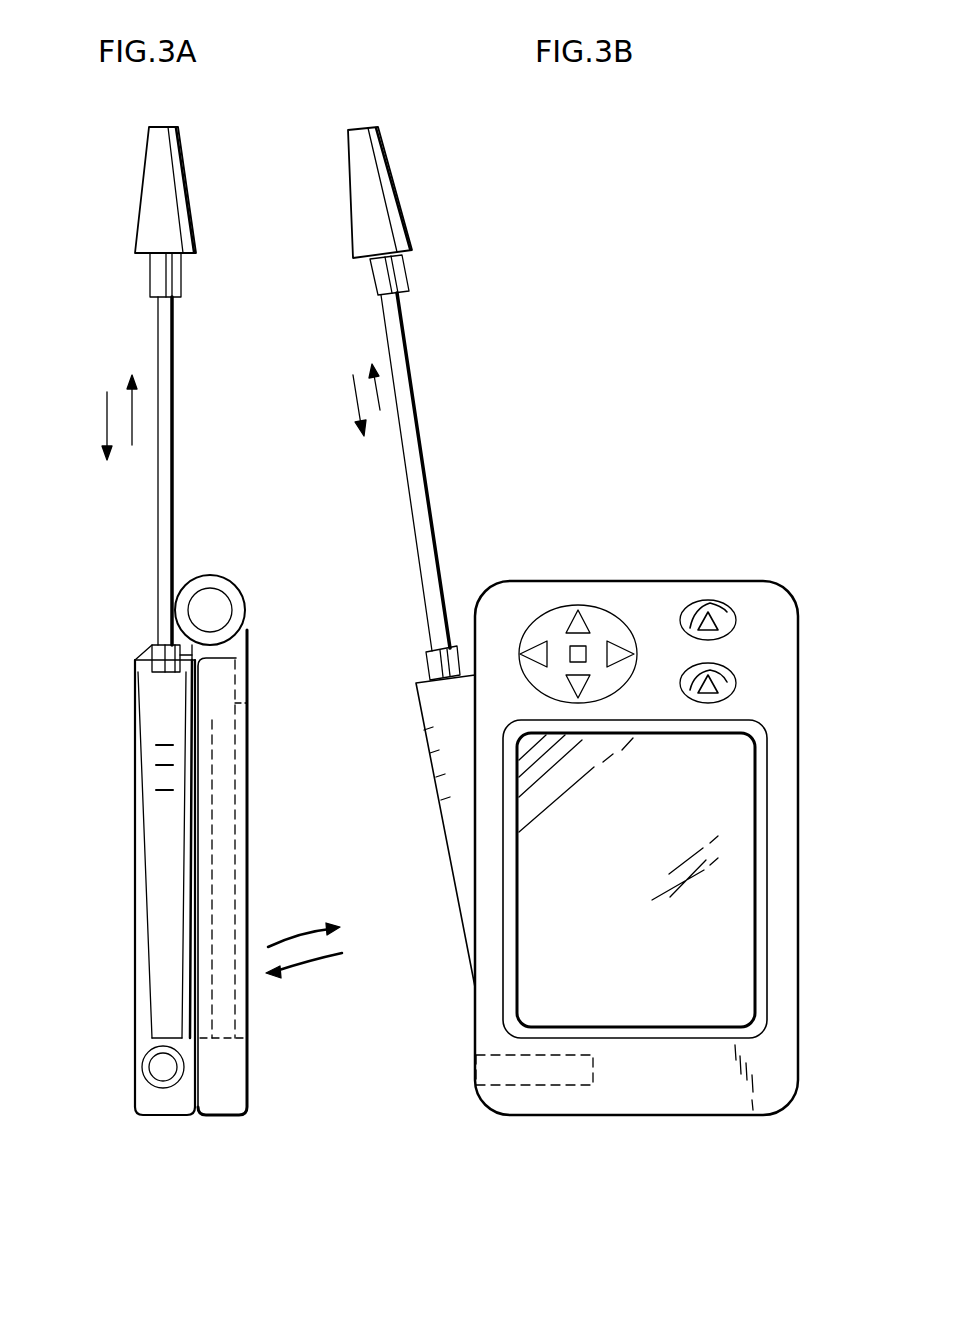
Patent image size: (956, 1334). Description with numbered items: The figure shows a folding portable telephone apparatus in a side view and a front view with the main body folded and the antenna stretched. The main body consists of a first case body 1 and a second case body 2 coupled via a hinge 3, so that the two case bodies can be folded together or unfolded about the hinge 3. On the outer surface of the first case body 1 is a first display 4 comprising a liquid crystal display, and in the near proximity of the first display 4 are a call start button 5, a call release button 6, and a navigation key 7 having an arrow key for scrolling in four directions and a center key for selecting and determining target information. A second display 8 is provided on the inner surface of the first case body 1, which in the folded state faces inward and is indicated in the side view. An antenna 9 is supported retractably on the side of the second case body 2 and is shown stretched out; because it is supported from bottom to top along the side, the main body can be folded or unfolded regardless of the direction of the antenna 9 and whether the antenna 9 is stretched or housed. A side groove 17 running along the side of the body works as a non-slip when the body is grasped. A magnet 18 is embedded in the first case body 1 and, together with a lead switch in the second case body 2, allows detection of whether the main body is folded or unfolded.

In FIG. 3A, the first case body 1 is at (233, 1095).
In FIG. 3B, the first case body 1 is at (780, 1045).
In FIG. 3A, the second case body 2 is at (150, 1103).
In FIG. 3A, the hinge 3 is at (218, 612).
In FIG. 3A, the first display 4 is at (237, 872).
In FIG. 3B, the first display 4 is at (720, 775).
In FIG. 3B, the call start button 5 is at (715, 605).
In FIG. 3B, the call release button 6 is at (730, 675).
In FIG. 3B, the navigation key 7 is at (606, 625).
In FIG. 3A, the second display 8 is at (215, 785).
In FIG. 3A, the antenna 9 is at (162, 150).
In FIG. 3B, the antenna 9 is at (380, 158).
In FIG. 3A, the side groove 17 is at (165, 742).
In FIG. 3B, the side groove 17 is at (430, 722).
In FIG. 3A, the magnet 18 is at (163, 1065).
In FIG. 3B, the magnet 18 is at (545, 1086).